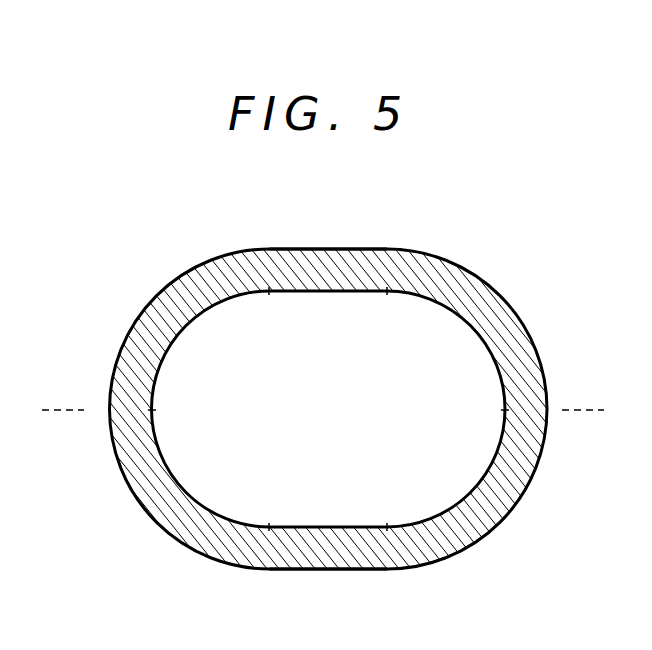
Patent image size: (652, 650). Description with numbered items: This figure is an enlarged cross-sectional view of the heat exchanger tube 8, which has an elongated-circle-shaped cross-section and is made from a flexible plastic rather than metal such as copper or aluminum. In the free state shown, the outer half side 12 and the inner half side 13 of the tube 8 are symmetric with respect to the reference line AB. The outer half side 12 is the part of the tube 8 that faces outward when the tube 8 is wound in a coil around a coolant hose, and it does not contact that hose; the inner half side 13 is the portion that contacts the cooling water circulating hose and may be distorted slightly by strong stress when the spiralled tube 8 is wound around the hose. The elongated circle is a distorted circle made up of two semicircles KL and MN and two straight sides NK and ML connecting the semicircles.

The heat exchanger tube 8 is at (236, 223).
The outer half side 12 is at (322, 249).
The inner half side 13 is at (316, 570).